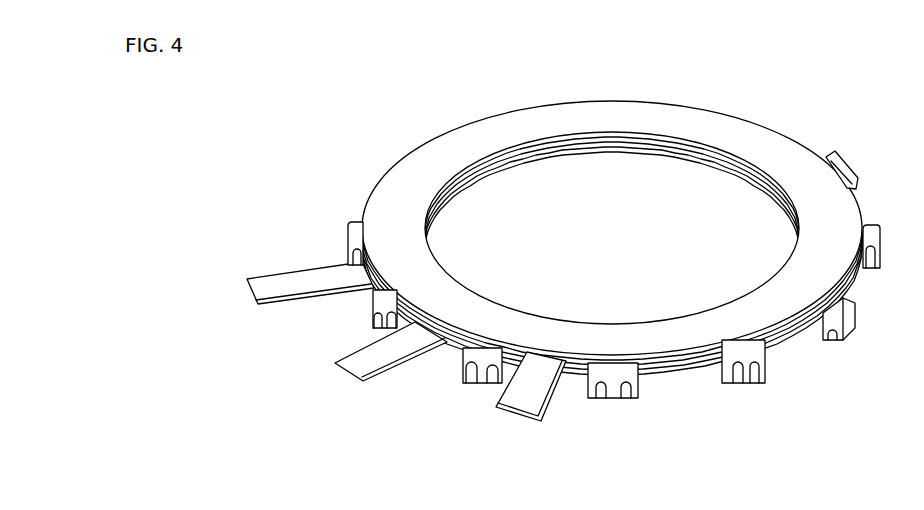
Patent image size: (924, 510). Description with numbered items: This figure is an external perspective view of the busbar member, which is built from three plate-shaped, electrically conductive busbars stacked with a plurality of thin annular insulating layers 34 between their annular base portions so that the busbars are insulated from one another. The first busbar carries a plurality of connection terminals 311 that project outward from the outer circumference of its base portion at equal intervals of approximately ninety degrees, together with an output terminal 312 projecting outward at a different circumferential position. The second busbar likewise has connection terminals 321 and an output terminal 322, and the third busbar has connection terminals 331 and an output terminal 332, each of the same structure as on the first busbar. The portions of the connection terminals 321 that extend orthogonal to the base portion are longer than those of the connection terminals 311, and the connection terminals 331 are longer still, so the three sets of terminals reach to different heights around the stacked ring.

The insulating layer 34 is at (670, 155).
The connection terminal 311 is at (477, 372).
The output terminal 312 is at (268, 282).
The connection terminal 321 is at (614, 387).
The output terminal 322 is at (355, 365).
The connection terminal 331 is at (758, 375).
The output terminal 332 is at (518, 403).